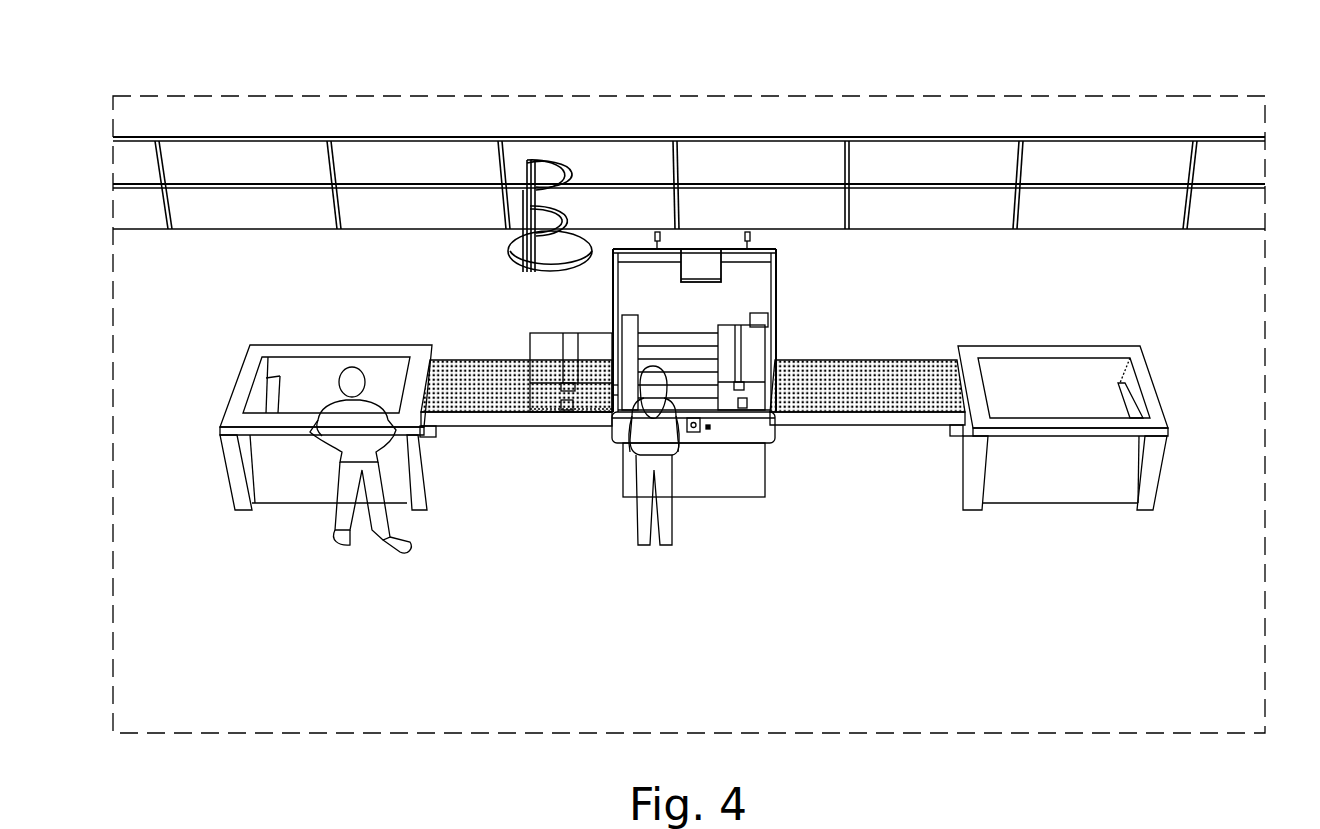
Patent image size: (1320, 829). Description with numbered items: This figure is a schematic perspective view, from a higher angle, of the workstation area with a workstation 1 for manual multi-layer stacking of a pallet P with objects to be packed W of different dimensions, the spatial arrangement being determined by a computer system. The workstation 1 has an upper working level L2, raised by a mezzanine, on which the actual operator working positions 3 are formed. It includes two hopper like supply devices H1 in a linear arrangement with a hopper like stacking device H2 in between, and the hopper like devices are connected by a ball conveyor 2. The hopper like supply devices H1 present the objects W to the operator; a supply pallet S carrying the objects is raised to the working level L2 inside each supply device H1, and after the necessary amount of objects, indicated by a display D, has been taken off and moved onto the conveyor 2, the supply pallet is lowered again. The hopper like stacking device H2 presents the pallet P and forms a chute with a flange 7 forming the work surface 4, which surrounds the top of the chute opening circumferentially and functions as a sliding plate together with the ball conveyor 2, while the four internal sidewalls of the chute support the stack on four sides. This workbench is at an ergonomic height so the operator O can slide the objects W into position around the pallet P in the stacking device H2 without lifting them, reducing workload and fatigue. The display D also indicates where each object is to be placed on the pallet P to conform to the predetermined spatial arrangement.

The workstation 1 is at (1208, 268).
The upper working level L2 is at (215, 152).
The hopper like supply device H1 is at (270, 328).
The ball conveyor 2 is at (470, 363).
The objects to be packed W is at (556, 362).
The pallet P is at (678, 370).
The display D is at (702, 258).
The hopper like stacking device H2 is at (746, 436).
The work surface 4 is at (694, 436).
The flange 7 is at (619, 403).
The supply pallet S is at (384, 383).
The operator O is at (683, 578).
The operator working position 3 is at (357, 598).